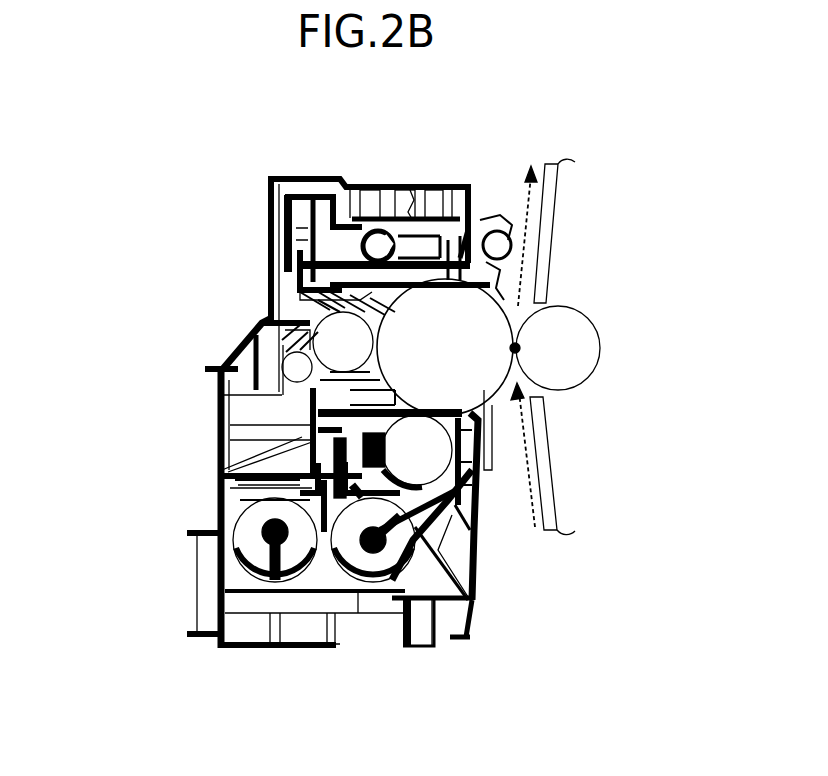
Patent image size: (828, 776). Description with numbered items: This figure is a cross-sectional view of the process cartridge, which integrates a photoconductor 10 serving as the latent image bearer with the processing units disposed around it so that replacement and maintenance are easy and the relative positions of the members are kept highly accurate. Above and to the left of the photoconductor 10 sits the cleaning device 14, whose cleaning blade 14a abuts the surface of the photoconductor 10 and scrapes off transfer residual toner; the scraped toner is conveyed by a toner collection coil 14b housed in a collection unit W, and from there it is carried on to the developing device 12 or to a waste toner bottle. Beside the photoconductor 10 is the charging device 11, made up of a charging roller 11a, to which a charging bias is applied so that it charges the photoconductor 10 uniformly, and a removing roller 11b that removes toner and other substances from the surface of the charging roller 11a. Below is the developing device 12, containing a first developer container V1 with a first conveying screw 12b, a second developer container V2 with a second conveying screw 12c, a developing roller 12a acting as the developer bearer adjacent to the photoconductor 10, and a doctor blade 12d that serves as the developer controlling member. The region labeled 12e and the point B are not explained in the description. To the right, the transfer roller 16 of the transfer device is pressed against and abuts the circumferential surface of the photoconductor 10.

The photoconductor 10 is at (433, 358).
The charging device 11 is at (104, 318).
The charging roller 11a is at (262, 328).
The removing roller 11b is at (218, 388).
The developing device 12 is at (212, 533).
The developing roller 12a is at (478, 493).
The first conveying screw 12b is at (218, 566).
The second conveying screw 12c is at (360, 615).
The doctor blade 12d is at (460, 523).
The developer supply opening 12e is at (220, 457).
The cleaning device 14 is at (268, 183).
The cleaning blade 14a is at (300, 266).
The toner collection coil 14b is at (358, 190).
The transfer roller 16 is at (582, 308).
The transfer nip B is at (520, 348).
The collection unit W is at (415, 196).
The first developer container V1 is at (218, 490).
The second developer container V2 is at (473, 597).